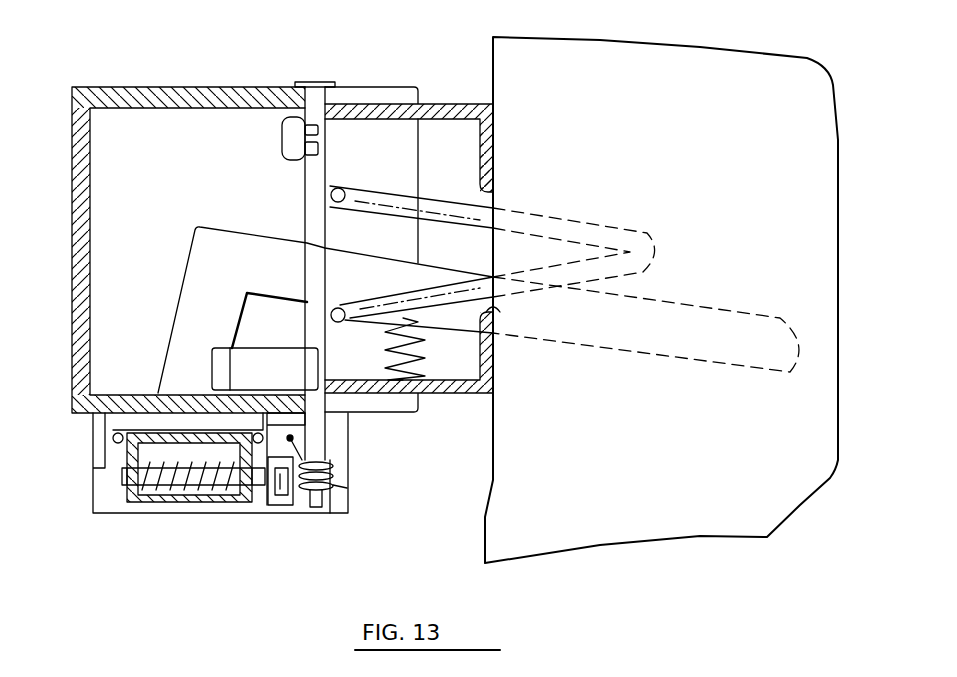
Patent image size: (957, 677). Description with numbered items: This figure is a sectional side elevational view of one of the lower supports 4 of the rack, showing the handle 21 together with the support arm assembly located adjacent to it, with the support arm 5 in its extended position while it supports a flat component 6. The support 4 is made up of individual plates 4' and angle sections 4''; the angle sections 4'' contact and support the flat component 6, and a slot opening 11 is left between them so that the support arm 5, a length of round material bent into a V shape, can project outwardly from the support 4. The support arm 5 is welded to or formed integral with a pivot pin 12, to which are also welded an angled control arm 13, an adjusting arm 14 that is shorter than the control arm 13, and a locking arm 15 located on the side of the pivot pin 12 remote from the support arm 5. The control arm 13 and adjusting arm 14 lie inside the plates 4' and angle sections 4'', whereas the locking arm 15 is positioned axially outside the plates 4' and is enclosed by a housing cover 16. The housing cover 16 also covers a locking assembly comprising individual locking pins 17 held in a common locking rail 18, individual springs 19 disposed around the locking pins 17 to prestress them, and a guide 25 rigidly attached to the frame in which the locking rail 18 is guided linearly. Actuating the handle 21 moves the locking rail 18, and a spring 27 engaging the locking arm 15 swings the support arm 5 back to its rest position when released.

The lower support 4 is at (406, 446).
The individual plates 4' is at (167, 227).
The angle sections 4'' is at (409, 242).
The support arm 5 is at (441, 206).
The flat component 6 is at (680, 524).
The slot opening 11 is at (496, 310).
The pivot pin 12 is at (305, 176).
The control arm 13 is at (222, 398).
The adjusting arm 14 is at (282, 133).
The locking arm 15 is at (284, 505).
The housing cover 16 is at (348, 467).
The locking pin 17 is at (262, 484).
The locking rail 18 is at (136, 497).
The spring 19 is at (205, 482).
The handle 21 is at (706, 318).
The guide 25 is at (113, 438).
The spring 27 is at (320, 500).